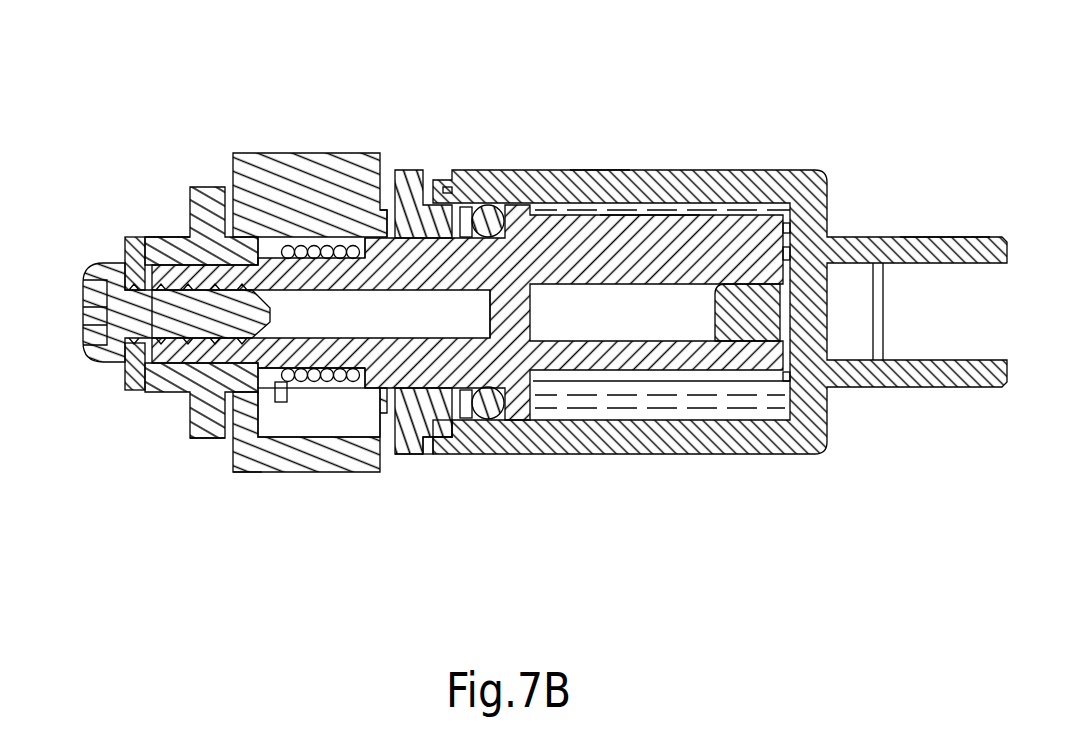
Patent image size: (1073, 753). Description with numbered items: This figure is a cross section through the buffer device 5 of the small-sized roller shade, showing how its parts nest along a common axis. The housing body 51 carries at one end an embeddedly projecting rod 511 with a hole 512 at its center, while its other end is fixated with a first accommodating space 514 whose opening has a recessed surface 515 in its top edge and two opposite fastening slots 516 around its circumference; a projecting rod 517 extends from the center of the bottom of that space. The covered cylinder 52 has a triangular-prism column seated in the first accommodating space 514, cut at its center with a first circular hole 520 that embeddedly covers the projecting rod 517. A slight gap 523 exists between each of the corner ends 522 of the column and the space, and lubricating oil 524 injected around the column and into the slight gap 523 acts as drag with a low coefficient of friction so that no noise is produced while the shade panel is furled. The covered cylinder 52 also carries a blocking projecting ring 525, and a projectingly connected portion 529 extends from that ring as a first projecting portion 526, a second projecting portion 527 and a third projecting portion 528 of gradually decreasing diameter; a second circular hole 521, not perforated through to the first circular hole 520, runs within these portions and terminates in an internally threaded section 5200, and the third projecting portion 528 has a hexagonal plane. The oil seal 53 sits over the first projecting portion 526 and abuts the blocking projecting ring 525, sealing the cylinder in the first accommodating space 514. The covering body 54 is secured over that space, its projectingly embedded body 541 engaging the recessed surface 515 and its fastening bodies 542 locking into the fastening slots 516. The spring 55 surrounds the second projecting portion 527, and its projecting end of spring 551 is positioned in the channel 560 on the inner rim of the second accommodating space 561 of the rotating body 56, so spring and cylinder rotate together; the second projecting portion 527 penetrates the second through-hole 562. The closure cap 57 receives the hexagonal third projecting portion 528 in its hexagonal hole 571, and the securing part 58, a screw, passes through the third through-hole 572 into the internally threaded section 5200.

The buffer device 5 is at (557, 59).
The housing body 51 is at (774, 156).
The embeddedly projecting rod 511 is at (942, 250).
The hole 512 is at (968, 277).
The first accommodating space 514 is at (592, 170).
The recessed surface 515 is at (488, 194).
The fastening slots 516 is at (430, 445).
The projecting rod 517 is at (795, 297).
The covered cylinder 52 is at (551, 421).
The first circular hole 520 is at (703, 330).
The second circular hole 521 is at (478, 327).
The corner ends 522 is at (708, 215).
The slight gap 523 is at (637, 208).
The lubricating oil 524 is at (673, 407).
The blocking projecting ring 525 is at (517, 413).
The first projecting portion 526 is at (372, 380).
The second projecting portion 527 is at (320, 353).
The third projecting portion 528 is at (182, 385).
The projectingly connected portion 529 is at (364, 214).
The oil seal 53 is at (494, 189).
The covering body 54 is at (401, 155).
The projectingly embedded body 541 is at (453, 443).
The fastening body 542 is at (413, 455).
The spring 55 is at (313, 222).
The projecting end of spring 551 is at (230, 470).
The rotating body 56 is at (276, 148).
The channel 560 is at (308, 430).
The second accommodating space 561 is at (272, 243).
The second through-hole 562 is at (203, 430).
The closure cap 57 is at (200, 182).
The hexagonal hole 571 is at (168, 240).
The third through-hole 572 is at (138, 240).
The securing part 58 is at (68, 270).
The internally threaded section 5200 is at (140, 388).